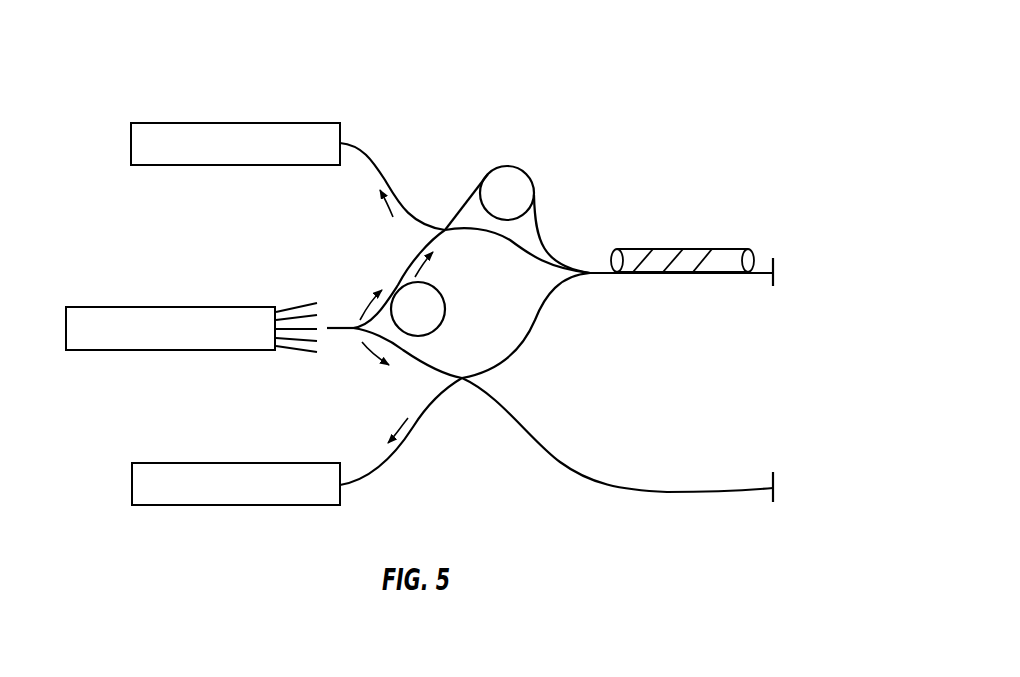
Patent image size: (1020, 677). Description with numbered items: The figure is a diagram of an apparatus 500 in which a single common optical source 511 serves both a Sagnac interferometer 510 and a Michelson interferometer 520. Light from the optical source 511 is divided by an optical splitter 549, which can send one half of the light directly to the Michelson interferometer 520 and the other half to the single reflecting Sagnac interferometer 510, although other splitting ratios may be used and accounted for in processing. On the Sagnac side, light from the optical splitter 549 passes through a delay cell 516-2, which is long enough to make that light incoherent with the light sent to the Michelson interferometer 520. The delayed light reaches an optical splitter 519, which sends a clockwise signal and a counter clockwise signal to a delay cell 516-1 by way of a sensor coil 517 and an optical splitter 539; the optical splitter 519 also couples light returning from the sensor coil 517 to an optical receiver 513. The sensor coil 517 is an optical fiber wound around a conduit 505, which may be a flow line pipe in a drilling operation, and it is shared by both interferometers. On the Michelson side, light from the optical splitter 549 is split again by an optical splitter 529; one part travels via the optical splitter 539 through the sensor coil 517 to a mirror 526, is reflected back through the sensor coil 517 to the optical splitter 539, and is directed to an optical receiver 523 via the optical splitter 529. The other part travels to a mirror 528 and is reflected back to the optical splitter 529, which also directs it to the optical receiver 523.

The apparatus 500 is at (158, 47).
The conduit 505 is at (735, 249).
The Sagnac interferometer 510 is at (132, 230).
The optical source 511 is at (81, 307).
The optical receiver 513 is at (150, 122).
The delay cell 516-1 is at (530, 177).
The delay cell 516-2 is at (440, 282).
The sensor coil 517 is at (650, 250).
The optical splitter 519 is at (443, 230).
The Michelson interferometer 520 is at (132, 404).
The optical receiver 523 is at (150, 463).
The mirror 526 is at (779, 273).
The mirror 528 is at (777, 491).
The optical splitter 529 is at (463, 380).
The optical splitter 539 is at (597, 274).
The optical splitter 549 is at (345, 332).